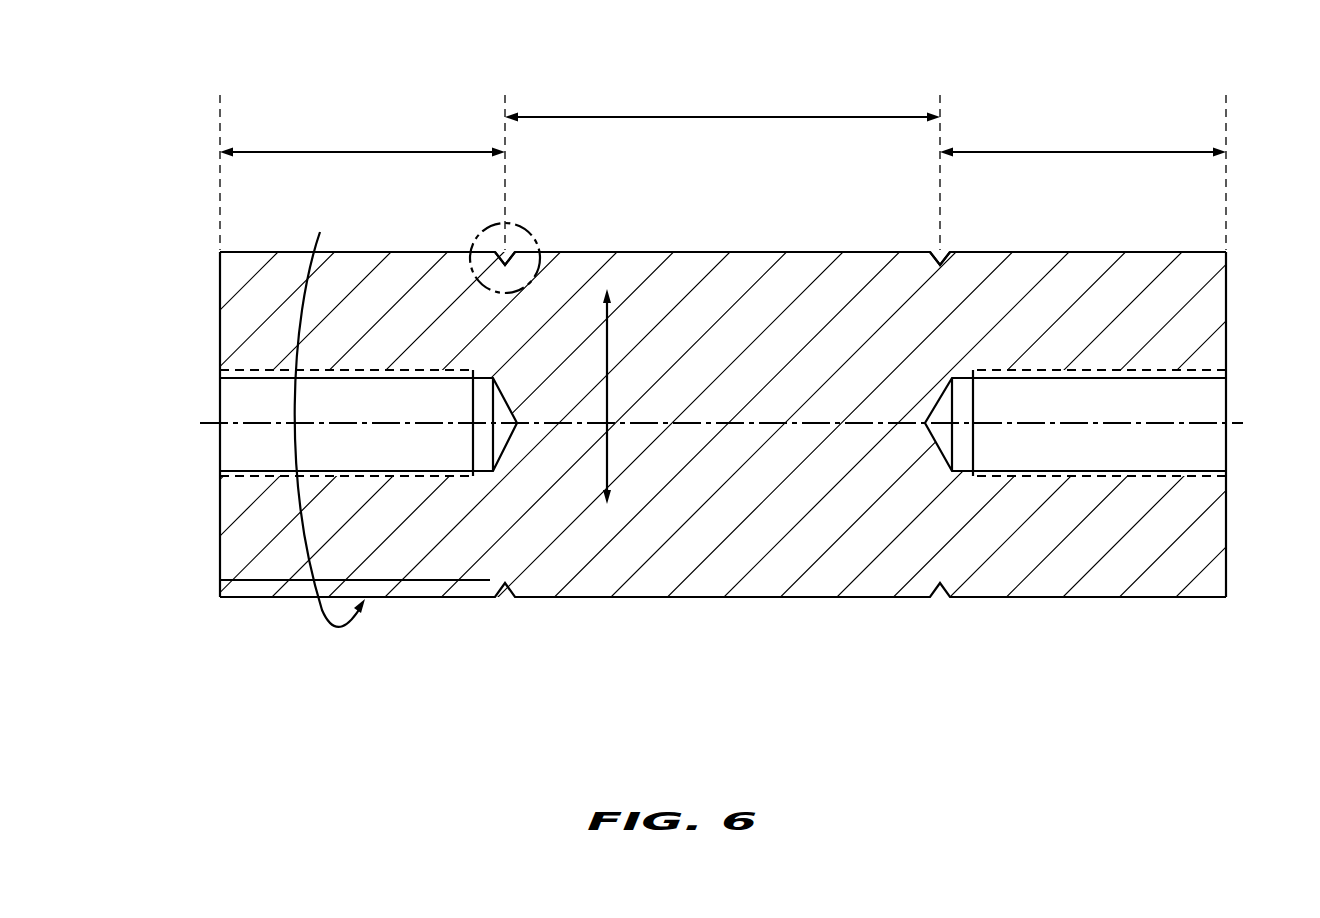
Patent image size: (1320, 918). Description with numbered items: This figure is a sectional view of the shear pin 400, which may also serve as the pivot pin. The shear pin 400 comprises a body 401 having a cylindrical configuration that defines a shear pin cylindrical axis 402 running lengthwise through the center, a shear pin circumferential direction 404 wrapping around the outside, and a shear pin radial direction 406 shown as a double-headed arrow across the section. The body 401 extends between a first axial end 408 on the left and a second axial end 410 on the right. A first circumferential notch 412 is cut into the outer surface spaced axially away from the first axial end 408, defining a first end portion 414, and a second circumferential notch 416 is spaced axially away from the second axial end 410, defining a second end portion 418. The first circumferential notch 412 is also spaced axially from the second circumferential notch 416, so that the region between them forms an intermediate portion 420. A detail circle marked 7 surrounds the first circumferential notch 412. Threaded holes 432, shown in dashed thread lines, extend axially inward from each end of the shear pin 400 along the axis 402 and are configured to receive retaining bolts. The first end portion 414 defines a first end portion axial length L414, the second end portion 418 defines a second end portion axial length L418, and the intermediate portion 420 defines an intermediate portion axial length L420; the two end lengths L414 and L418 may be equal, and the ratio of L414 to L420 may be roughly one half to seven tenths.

The shear pin 400 is at (1088, 599).
The body 401 is at (845, 599).
The shear pin cylindrical axis 402 is at (697, 423).
The shear pin circumferential direction 404 is at (365, 250).
The shear pin radial direction 406 is at (607, 343).
The first axial end 408 is at (220, 516).
The second axial end 410 is at (1226, 518).
The first circumferential notch 412 is at (540, 252).
The first end portion 414 is at (250, 252).
The second circumferential notch 416 is at (950, 258).
The second end portion 418 is at (1185, 252).
The intermediate portion 420 is at (795, 252).
The threaded holes 432 is at (235, 471).
The detail view FIG. 7 is at (488, 222).
The first end portion axial length L414 is at (380, 152).
The intermediate portion axial length L420 is at (738, 117).
The second end portion axial length L418 is at (1103, 152).